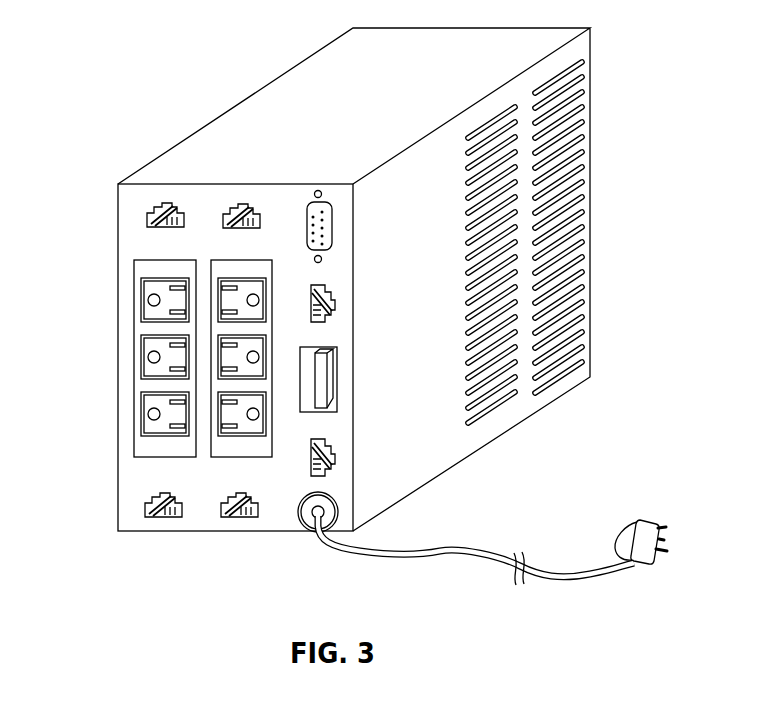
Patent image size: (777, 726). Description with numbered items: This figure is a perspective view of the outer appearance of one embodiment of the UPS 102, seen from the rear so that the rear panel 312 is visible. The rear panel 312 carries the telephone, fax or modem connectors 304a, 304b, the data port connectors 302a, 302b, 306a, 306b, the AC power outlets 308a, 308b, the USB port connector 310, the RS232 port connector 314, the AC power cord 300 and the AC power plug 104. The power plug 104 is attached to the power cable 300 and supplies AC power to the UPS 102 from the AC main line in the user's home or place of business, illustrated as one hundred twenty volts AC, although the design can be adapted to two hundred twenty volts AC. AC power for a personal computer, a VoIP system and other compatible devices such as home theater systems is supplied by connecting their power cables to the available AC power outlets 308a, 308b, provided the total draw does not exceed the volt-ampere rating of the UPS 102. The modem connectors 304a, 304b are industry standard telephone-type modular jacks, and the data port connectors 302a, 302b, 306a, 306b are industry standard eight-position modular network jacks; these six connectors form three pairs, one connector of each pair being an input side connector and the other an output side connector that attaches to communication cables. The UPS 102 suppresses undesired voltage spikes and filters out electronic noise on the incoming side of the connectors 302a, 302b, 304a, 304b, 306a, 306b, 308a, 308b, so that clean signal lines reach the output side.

The UPS 102 is at (495, 461).
The AC power plug 104 is at (643, 520).
The AC power cord 300 is at (338, 552).
The data port connector 302a is at (240, 518).
The data port connector 302b is at (163, 518).
The modem connector 304a is at (335, 303).
The modem connector 304b is at (335, 458).
The data port connector 306a is at (242, 205).
The data port connector 306b is at (147, 222).
The AC power outlet 308a is at (253, 260).
The AC power outlets 308b is at (135, 362).
The USB port connector 310 is at (337, 357).
The rear panel 312 is at (335, 485).
The RS232 port connector 314 is at (332, 225).